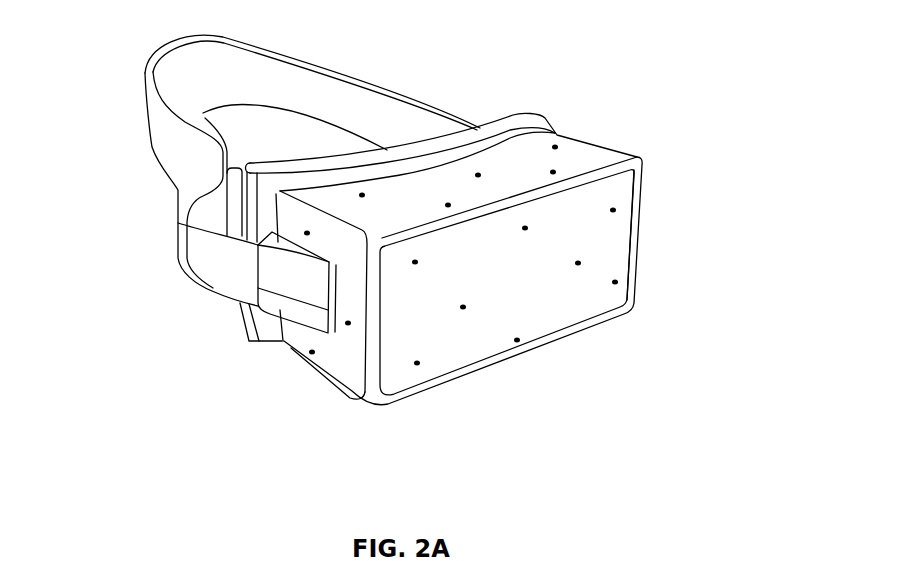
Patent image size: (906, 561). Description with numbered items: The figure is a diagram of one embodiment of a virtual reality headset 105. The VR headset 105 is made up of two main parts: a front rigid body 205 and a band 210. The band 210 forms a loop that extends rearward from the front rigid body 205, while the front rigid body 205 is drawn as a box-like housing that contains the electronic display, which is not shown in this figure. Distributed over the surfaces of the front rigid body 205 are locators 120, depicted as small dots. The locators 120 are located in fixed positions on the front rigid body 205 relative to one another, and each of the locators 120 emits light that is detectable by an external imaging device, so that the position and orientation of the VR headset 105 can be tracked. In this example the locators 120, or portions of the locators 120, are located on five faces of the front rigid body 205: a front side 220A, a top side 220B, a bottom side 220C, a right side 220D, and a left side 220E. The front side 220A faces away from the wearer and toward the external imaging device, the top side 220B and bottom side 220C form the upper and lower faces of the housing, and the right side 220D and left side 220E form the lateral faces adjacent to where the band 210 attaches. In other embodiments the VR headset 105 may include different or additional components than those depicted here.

The virtual reality headset 105 is at (44, 35).
The band 210 is at (398, 87).
The front rigid body 205 is at (640, 157).
The front side 220A is at (405, 377).
The top side 220B is at (341, 196).
The bottom side 220C is at (308, 381).
The right side 220D is at (344, 351).
The left side 220E is at (613, 148).
The locators 120 is at (620, 280).